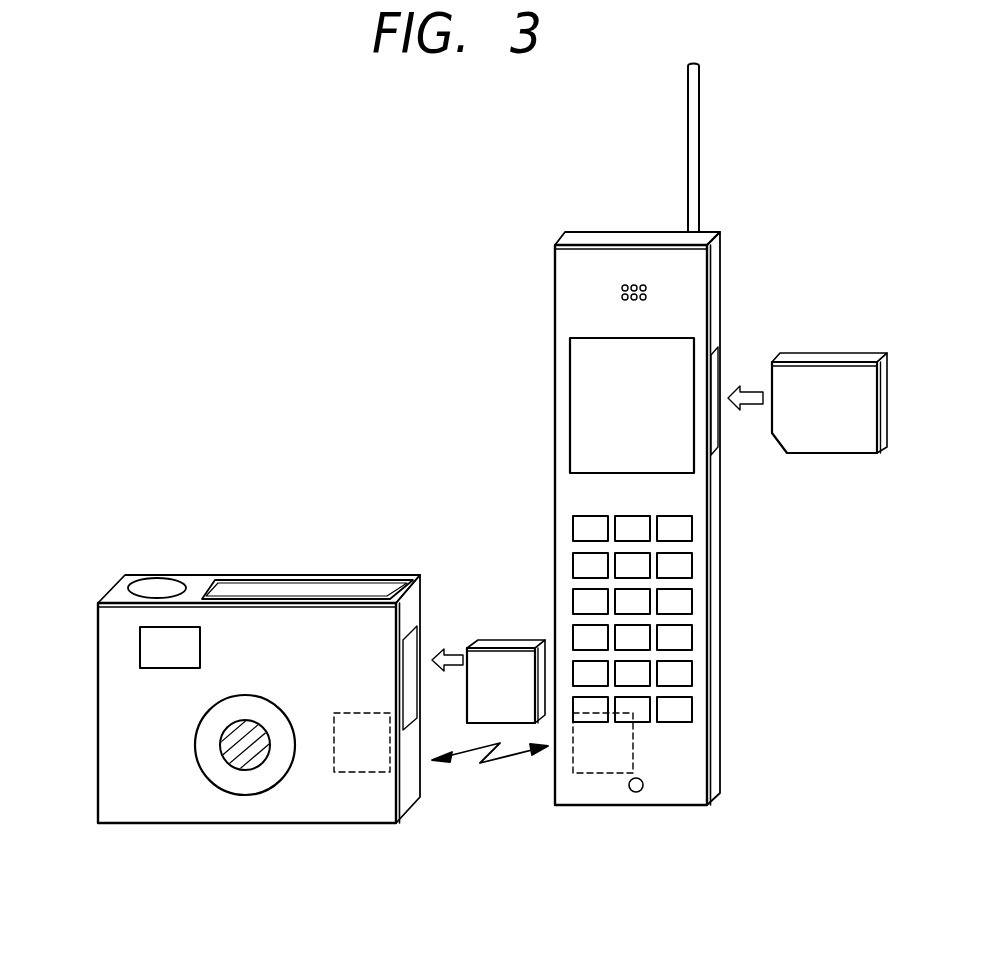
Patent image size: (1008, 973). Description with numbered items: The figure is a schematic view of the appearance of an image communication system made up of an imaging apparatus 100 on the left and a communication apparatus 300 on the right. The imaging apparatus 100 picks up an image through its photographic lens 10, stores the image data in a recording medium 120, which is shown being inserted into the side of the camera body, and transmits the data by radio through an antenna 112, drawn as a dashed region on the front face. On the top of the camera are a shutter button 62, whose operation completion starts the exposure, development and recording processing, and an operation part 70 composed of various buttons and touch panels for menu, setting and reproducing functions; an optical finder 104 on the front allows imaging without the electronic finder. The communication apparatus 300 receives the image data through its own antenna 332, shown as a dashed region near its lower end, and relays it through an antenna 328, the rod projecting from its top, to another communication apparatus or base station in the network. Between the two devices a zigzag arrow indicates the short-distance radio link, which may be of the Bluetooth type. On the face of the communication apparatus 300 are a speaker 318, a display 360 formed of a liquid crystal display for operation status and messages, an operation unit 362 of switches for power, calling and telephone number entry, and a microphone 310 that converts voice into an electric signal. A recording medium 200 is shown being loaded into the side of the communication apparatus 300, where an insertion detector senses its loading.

The imaging apparatus 100 is at (143, 808).
The photographic lens 10 is at (248, 770).
The shutter button 62 is at (157, 588).
The operation part 70 is at (305, 590).
The optical finder 104 is at (140, 642).
The antenna 112 is at (356, 772).
The recording medium 120 is at (510, 645).
The communication apparatus 300 is at (555, 408).
The antenna 328 is at (699, 148).
The speaker 318 is at (622, 282).
The display 360 is at (597, 338).
The operation unit 362 is at (727, 722).
The antenna 332 is at (595, 775).
The microphone 310 is at (636, 793).
The recording medium 200 is at (828, 357).